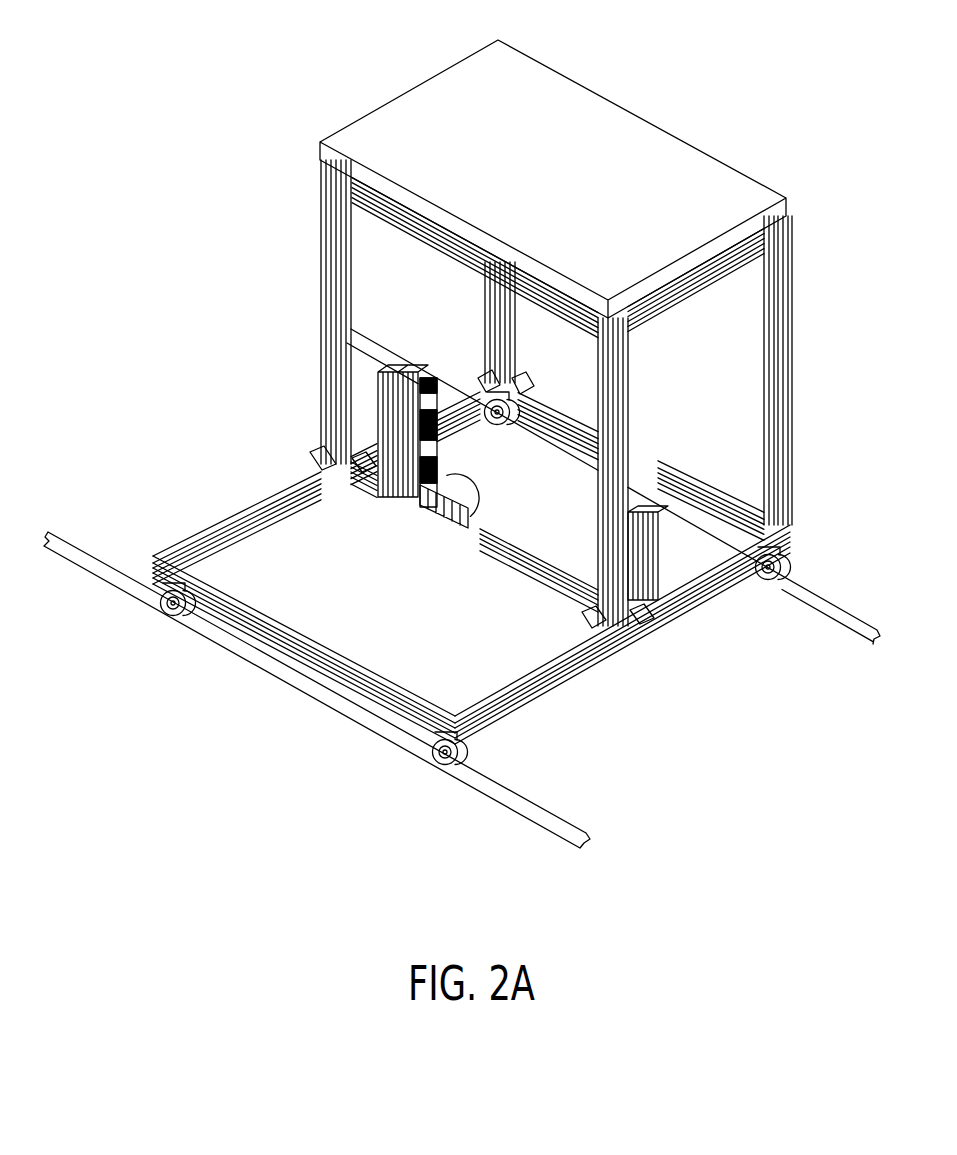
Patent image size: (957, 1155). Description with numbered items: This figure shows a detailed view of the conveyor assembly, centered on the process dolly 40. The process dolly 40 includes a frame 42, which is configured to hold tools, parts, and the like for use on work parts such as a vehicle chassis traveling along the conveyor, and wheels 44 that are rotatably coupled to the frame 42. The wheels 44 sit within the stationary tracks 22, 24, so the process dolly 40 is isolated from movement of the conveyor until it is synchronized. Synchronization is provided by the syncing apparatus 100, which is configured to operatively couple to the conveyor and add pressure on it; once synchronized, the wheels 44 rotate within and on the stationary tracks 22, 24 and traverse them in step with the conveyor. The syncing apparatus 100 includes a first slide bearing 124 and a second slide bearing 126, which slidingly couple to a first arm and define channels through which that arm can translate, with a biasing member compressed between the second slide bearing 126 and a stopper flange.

The process dolly 40 is at (667, 150).
The frame 42 is at (325, 270).
The wheels 44 is at (488, 397).
The stationary track 22 is at (568, 828).
The stationary track 24 is at (848, 630).
The second slide bearing 126 is at (408, 367).
The first slide bearing 124 is at (437, 448).
The syncing apparatus 100 is at (431, 539).